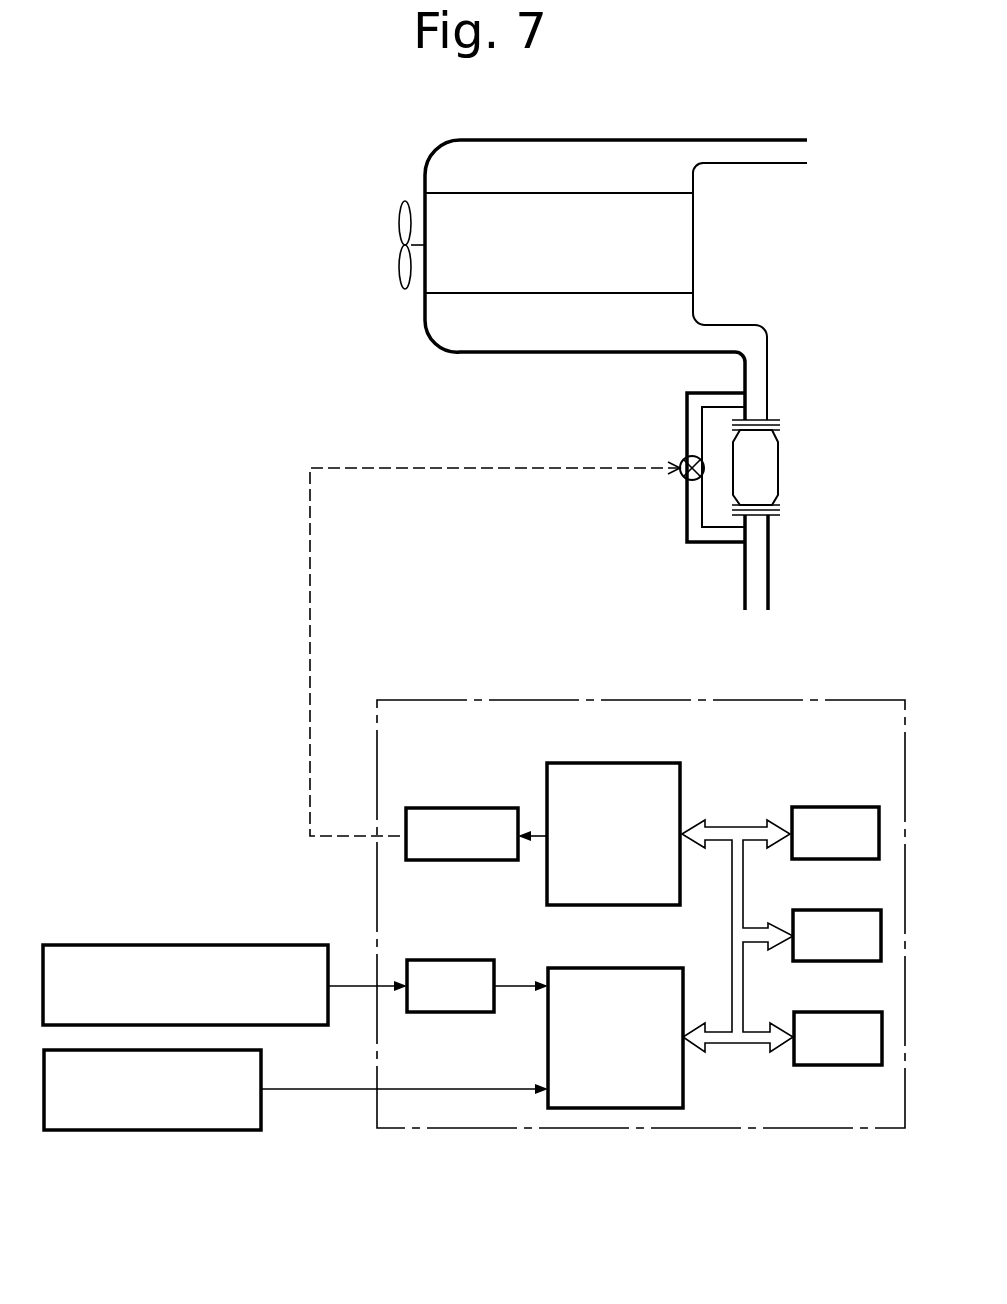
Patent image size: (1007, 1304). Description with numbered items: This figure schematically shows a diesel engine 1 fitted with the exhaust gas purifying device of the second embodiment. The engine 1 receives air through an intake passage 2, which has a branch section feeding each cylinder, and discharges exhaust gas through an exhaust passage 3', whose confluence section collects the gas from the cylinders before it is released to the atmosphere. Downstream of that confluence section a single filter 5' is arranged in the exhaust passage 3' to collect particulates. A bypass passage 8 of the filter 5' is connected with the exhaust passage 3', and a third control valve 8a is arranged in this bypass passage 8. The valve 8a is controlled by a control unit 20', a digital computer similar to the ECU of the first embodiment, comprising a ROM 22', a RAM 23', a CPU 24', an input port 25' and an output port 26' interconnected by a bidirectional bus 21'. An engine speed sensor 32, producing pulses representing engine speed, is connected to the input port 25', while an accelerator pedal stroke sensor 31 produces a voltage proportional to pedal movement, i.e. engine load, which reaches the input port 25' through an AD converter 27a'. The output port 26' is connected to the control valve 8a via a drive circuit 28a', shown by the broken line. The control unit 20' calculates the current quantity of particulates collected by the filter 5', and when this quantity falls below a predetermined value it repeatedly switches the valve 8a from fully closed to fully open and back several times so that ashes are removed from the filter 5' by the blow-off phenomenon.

The diesel engine 1 is at (407, 303).
The intake passage 2 is at (668, 147).
The exhaust passage 3' is at (736, 435).
The filter 5' is at (771, 450).
The bypass passage 8 is at (687, 505).
The third control valve 8a is at (680, 455).
The control unit (ECU) 20' is at (641, 894).
The bidirectional bus 21' is at (737, 914).
The ROM 22' is at (835, 810).
The RAM 23' is at (837, 914).
The CPU 24' is at (838, 1017).
The input port 25' is at (651, 1038).
The output port 26' is at (613, 809).
The AD converter 27a' is at (438, 963).
The drive circuit 28a' is at (476, 811).
The accelerator pedal stroke sensor 31 is at (262, 1062).
The engine speed sensor 32 is at (270, 945).